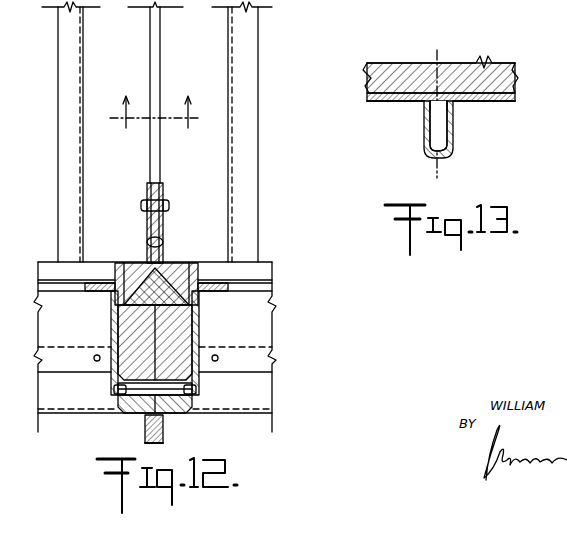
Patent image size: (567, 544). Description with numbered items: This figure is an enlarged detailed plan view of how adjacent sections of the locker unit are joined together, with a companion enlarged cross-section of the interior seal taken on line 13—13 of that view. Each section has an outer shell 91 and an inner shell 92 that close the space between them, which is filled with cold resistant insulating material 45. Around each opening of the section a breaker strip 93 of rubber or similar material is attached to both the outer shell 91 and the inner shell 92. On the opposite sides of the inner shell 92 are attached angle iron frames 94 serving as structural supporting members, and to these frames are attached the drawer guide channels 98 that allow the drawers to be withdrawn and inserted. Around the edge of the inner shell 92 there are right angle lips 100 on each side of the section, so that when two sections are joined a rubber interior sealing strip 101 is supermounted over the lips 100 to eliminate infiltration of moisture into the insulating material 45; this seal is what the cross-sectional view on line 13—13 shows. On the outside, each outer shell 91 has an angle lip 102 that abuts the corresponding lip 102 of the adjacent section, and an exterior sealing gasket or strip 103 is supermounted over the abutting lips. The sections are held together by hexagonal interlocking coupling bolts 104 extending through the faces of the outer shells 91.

In FIG. 12, the section line 13- 13 is at (155, 103).
In FIG. 13, the cold resistant insulating material 45 is at (515, 73).
In FIG. 12, the outer shell 91 is at (114, 406).
In FIG. 13, the outer shell 91 is at (372, 90).
In FIG. 12, the inner shell 92 is at (118, 273).
In FIG. 12, the breaker strip 93 is at (114, 314).
In FIG. 12, the angle iron frames 94 is at (145, 214).
In FIG. 12, the drawer guide channels 98 is at (76, 178).
In FIG. 12, the right angle lips 100 is at (148, 244).
In FIG. 13, the right angle lips 100 is at (428, 120).
In FIG. 12, the interior sealing strip 101 is at (157, 153).
In FIG. 13, the interior sealing strip 101 is at (450, 155).
In FIG. 12, the angle lip 102 is at (174, 428).
In FIG. 12, the exterior sealing strip 103 is at (158, 444).
In FIG. 12, the hexagonal interlocking coupling bolts 104 is at (116, 393).